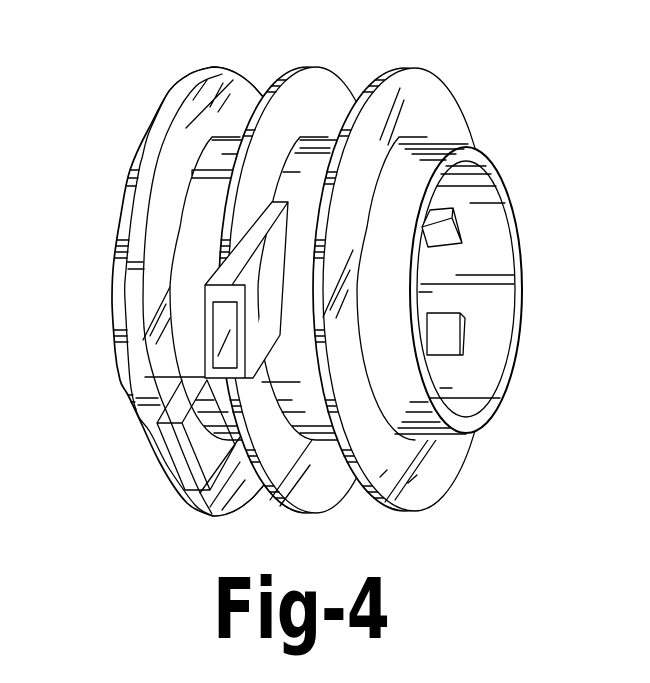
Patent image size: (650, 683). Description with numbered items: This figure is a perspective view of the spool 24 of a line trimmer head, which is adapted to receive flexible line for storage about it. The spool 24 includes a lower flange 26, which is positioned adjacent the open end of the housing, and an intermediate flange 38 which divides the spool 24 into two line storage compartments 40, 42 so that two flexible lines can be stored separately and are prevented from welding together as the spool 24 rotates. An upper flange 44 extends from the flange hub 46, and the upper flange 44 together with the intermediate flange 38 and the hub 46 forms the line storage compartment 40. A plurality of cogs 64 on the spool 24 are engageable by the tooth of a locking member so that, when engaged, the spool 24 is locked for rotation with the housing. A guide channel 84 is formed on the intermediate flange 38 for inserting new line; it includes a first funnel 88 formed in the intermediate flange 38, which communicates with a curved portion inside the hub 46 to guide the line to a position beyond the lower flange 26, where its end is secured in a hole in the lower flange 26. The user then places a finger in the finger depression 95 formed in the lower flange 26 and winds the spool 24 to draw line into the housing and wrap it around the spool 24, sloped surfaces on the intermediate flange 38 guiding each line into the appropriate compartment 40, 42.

The spool 24 is at (309, 305).
The lower flange 26 is at (172, 90).
The intermediate flange 38 is at (280, 80).
The line storage compartment 40 is at (328, 92).
The line storage compartment 42 is at (267, 92).
The upper flange 44 is at (382, 70).
The flange hub 46 is at (413, 400).
The cogs 64 is at (458, 226).
The guide channel 84 is at (207, 320).
The first funnel 88 is at (237, 327).
The finger depression 95 is at (207, 435).